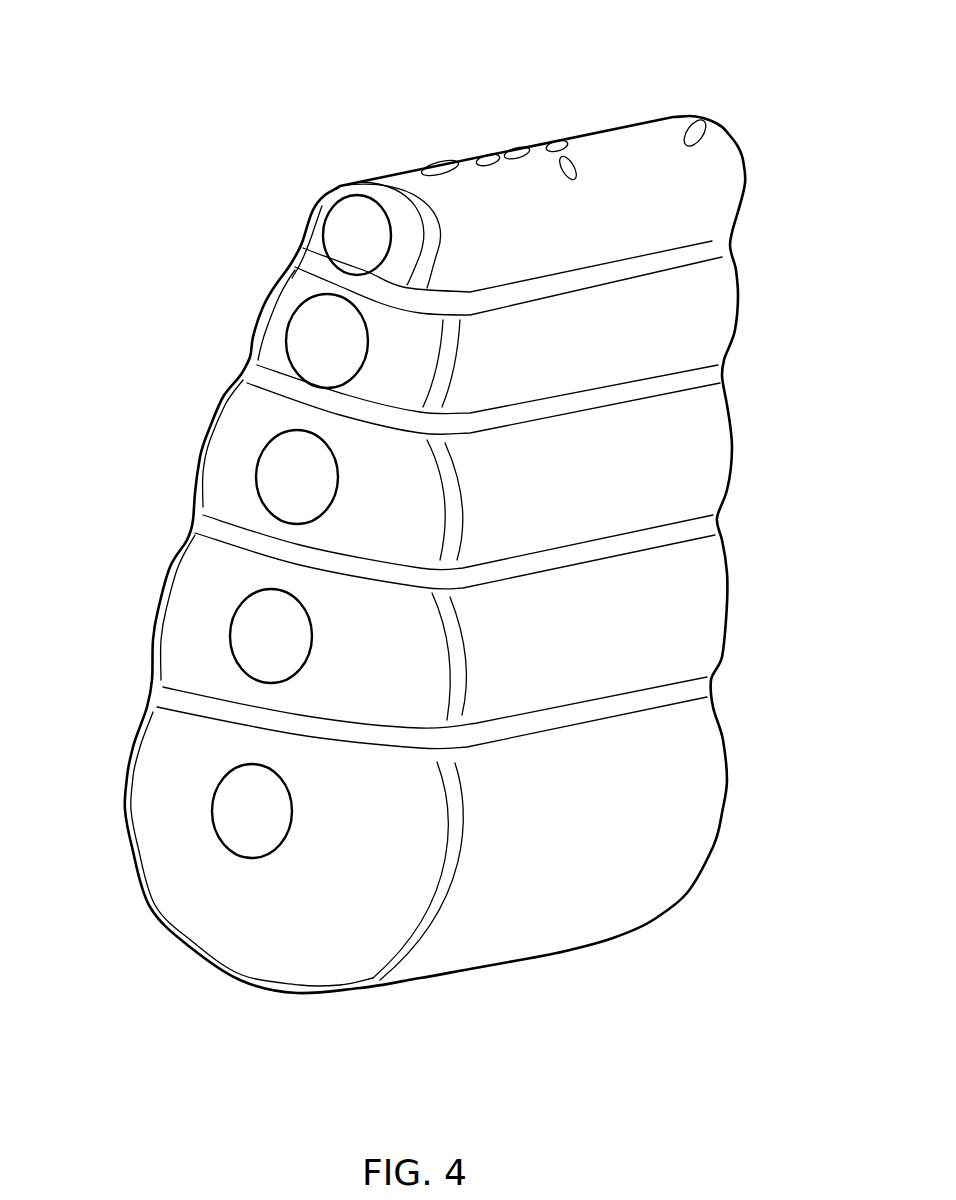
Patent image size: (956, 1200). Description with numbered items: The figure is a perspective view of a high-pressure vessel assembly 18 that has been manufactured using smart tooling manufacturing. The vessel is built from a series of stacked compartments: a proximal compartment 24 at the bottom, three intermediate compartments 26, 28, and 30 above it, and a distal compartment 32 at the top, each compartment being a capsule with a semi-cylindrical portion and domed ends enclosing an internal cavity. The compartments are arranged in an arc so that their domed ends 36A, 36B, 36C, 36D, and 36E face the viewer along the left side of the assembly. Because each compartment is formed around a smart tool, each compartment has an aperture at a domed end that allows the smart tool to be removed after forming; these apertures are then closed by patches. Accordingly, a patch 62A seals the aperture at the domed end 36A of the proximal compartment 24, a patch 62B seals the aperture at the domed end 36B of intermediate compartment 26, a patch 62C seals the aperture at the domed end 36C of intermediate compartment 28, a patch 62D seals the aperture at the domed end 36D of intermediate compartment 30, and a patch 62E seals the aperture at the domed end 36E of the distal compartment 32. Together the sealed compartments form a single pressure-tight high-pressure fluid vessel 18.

The high-pressure fluid vessel 18 is at (178, 88).
The proximal compartment 24 is at (756, 808).
The intermediate compartment 26 is at (756, 597).
The intermediate compartment 28 is at (756, 447).
The intermediate compartment 30 is at (762, 297).
The distal compartment 32 is at (772, 163).
The domed end 36A is at (183, 853).
The domed end 36B is at (195, 642).
The domed end 36C is at (240, 448).
The domed end 36D is at (273, 343).
The domed end 36E is at (358, 184).
The patch 62A is at (240, 805).
The patch 62B is at (263, 625).
The patch 62C is at (298, 457).
The patch 62D is at (325, 335).
The patch 62E is at (343, 237).